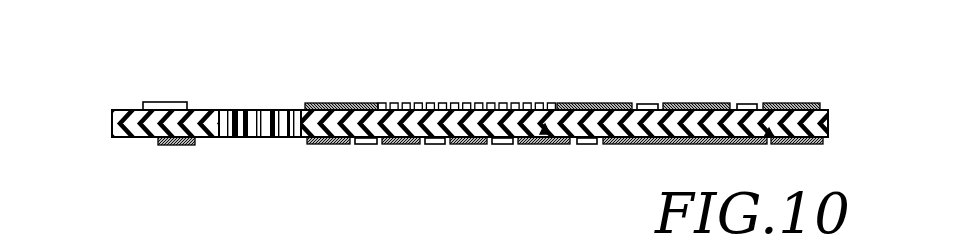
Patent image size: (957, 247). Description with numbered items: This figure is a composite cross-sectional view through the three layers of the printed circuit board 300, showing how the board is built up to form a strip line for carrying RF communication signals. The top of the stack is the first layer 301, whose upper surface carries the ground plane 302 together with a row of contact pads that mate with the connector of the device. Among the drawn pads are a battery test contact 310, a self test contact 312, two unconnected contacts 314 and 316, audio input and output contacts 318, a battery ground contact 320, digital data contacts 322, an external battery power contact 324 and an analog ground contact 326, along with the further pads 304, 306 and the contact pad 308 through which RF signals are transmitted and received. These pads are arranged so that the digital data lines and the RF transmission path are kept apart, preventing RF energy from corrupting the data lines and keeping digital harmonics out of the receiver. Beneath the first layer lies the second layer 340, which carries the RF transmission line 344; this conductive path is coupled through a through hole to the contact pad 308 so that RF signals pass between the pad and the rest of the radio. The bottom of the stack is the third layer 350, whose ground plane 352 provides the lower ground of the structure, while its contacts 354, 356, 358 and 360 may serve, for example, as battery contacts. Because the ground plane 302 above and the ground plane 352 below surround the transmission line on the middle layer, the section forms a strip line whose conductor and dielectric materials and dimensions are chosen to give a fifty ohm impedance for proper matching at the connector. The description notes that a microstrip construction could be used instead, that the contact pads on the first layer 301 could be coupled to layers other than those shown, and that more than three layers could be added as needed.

The printed circuit board 300 is at (94, 98).
The first layer 301 is at (822, 114).
The ground plane 302 is at (623, 105).
The contact pad 304 is at (551, 103).
The contact pad 306 is at (527, 103).
The contact pad 308 is at (539, 103).
The battery test contact 310 is at (515, 103).
The self test contact 312 is at (503, 103).
The unconnected contact 314 is at (491, 103).
The unconnected contact 316 is at (479, 103).
The audio input and output contacts 318 is at (467, 103).
The battery ground contact 320 is at (442, 103).
The digital data contacts 322 is at (430, 103).
The external battery power contact 324 is at (394, 103).
The analog ground contact 326 is at (382, 103).
The second layer 340 is at (828, 127).
The RF transmission line 344 is at (768, 136).
The third layer 350 is at (820, 143).
The ground plane 352 is at (530, 143).
The contact 354 is at (367, 145).
The contact 356 is at (437, 145).
The contact 358 is at (502, 145).
The contact 360 is at (585, 146).